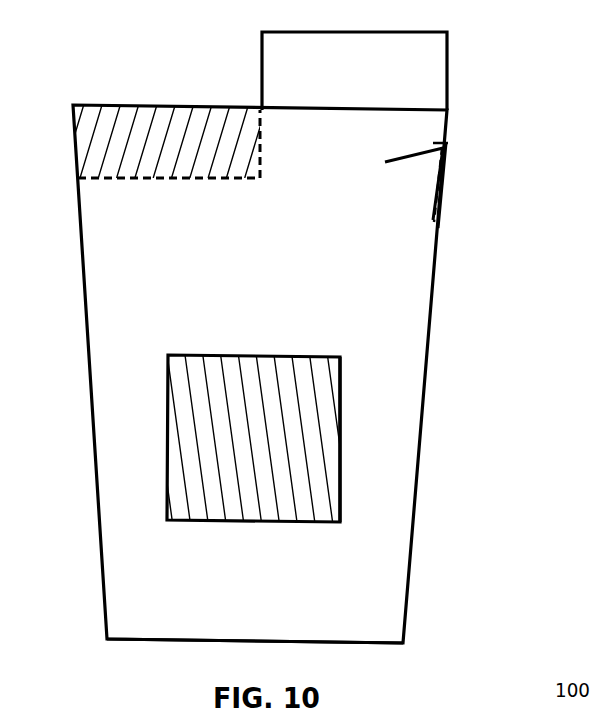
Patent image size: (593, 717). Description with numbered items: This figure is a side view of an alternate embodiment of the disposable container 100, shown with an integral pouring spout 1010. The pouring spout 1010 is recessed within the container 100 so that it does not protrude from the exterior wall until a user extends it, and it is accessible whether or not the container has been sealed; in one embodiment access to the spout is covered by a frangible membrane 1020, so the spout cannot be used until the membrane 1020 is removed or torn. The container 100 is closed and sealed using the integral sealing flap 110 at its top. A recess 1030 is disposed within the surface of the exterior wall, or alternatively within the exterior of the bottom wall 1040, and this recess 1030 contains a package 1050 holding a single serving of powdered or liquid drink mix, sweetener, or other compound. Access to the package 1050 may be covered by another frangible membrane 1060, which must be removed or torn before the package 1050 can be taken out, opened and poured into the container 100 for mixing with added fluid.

The disposable container 100 is at (425, 383).
The integral sealing flap 110 is at (447, 52).
The pouring spout 1010 is at (445, 173).
The frangible membrane 1020 is at (445, 202).
The recess 1030 is at (262, 427).
The bottom wall 1040 is at (147, 650).
The package 1050 is at (343, 503).
The frangible membrane 1060 is at (195, 410).